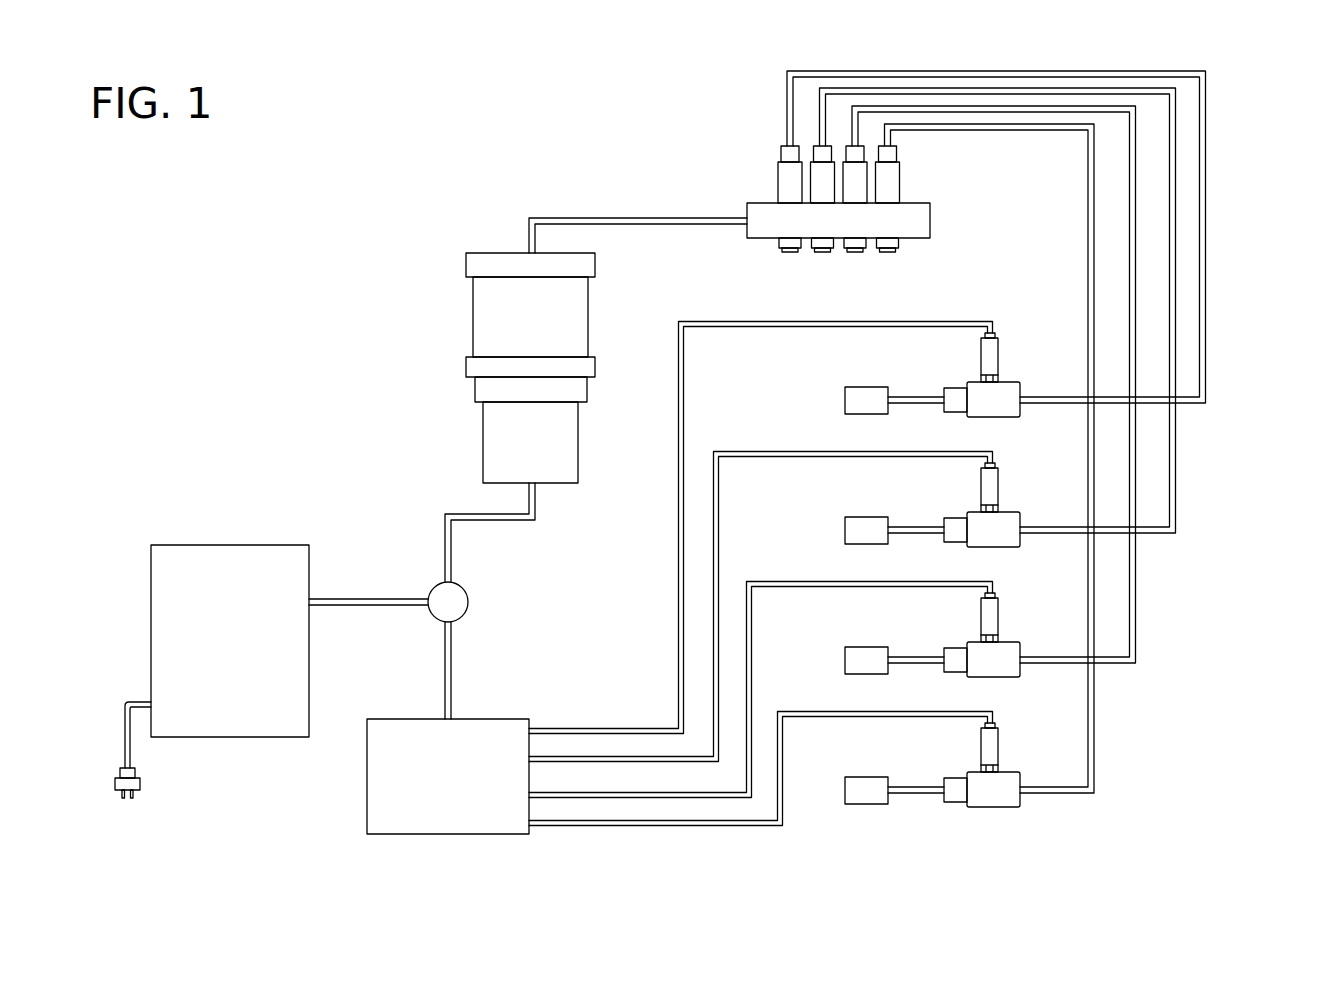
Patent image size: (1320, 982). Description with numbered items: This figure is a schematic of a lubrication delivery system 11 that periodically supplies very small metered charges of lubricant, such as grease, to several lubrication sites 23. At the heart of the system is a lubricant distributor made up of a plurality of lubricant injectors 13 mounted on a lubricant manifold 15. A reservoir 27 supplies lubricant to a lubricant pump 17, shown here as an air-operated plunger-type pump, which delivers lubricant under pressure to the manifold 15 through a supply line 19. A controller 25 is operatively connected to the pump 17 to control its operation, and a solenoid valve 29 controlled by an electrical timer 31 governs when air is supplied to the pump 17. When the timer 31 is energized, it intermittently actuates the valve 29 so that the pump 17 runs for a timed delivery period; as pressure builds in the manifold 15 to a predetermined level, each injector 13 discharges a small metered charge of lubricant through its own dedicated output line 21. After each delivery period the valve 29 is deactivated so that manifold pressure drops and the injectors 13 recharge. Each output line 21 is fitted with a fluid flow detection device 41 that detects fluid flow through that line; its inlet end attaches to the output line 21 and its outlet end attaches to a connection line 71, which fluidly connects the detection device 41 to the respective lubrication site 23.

The lubrication delivery system 11 is at (267, 223).
The lubricant injector 13 is at (822, 190).
The lubricant manifold 15 is at (923, 228).
The lubricant pump 17 is at (500, 450).
The supply line 19 is at (605, 214).
The output line 21 is at (1173, 212).
The lubrication site 23 is at (852, 402).
The controller 25 is at (390, 798).
The reservoir 27 is at (508, 313).
The solenoid valve 29 is at (468, 610).
The electrical timer 31 is at (218, 556).
The fluid flow detection device 41 is at (1000, 382).
The connection line 71 is at (915, 400).